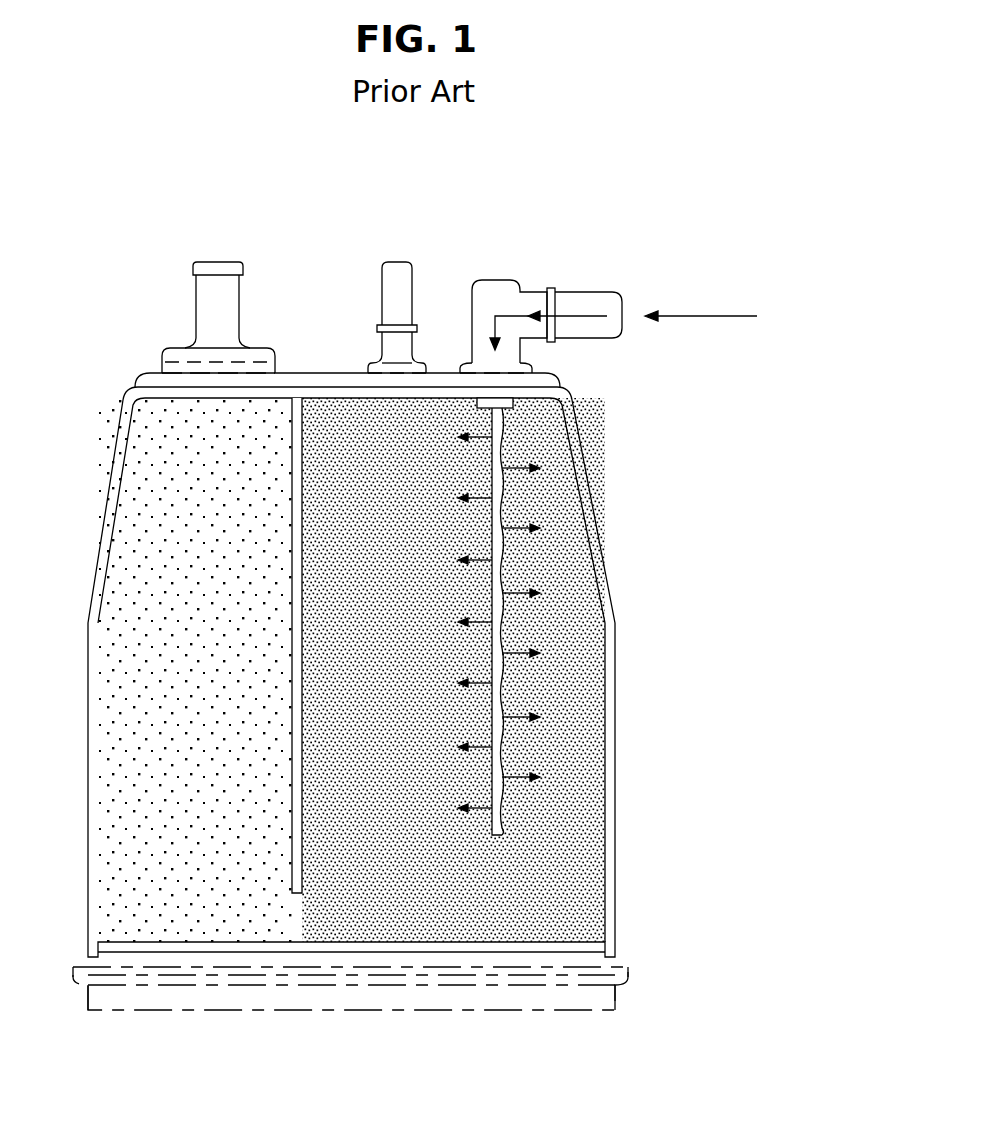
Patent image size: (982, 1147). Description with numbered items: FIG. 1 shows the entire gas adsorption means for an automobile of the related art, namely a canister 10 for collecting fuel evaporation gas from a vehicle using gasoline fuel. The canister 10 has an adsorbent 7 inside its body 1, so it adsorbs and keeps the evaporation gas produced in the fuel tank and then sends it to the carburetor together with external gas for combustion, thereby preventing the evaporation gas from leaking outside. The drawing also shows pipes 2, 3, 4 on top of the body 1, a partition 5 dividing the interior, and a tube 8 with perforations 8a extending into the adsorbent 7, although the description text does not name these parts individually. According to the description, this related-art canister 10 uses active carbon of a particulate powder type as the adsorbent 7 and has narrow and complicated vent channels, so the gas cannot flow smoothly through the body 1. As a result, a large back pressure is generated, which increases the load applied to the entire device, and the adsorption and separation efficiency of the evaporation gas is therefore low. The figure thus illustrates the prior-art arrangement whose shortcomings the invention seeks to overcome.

The canister 10 is at (86, 190).
The canister body 1 is at (577, 446).
The inlet pipe 2 is at (578, 297).
The purge pipe 3 is at (397, 268).
The air pipe 4 is at (217, 263).
The partition wall 5 is at (297, 565).
The adsorbent 7 is at (155, 745).
The distribution tube 8 is at (502, 560).
The perforations 8a is at (504, 524).